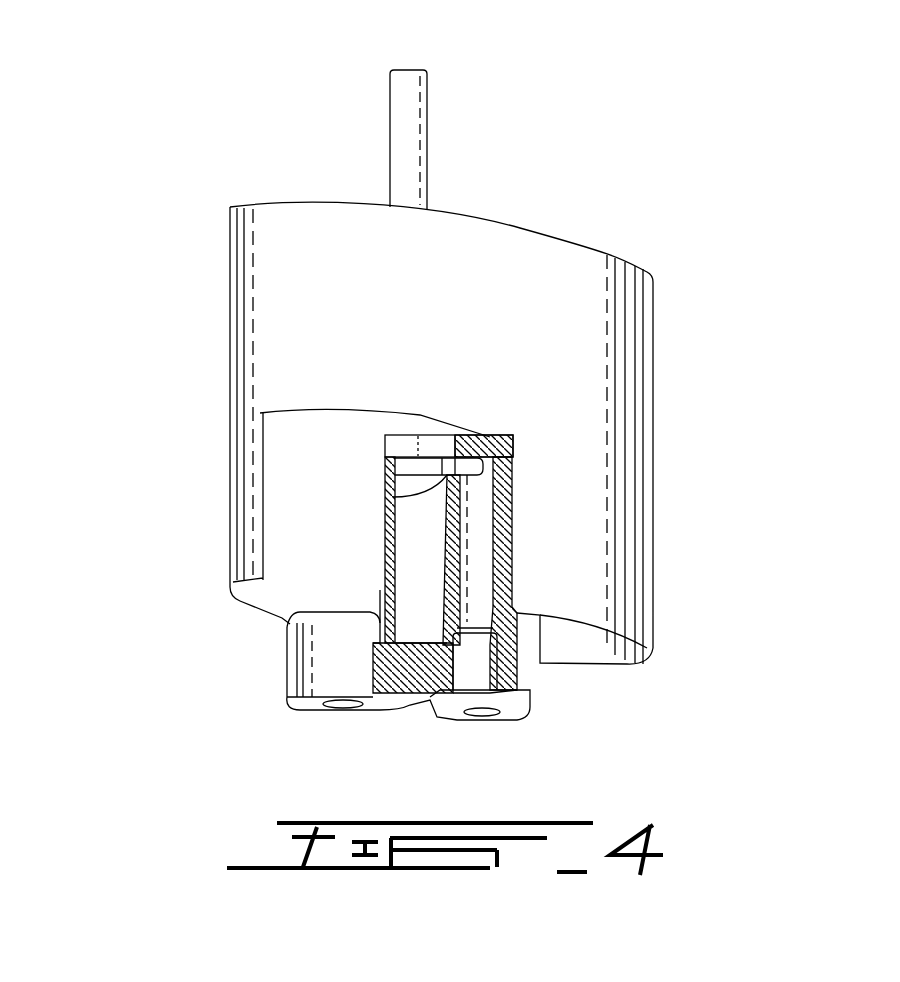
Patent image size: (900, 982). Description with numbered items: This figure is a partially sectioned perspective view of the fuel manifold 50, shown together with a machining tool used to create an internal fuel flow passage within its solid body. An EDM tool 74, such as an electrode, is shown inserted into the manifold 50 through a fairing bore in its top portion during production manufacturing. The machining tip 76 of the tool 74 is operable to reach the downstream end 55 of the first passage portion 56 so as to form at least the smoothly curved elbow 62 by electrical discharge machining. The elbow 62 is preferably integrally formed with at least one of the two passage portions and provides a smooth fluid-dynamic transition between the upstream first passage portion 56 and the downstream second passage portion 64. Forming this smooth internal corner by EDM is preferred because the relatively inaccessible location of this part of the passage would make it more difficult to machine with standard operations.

The fuel manifold 50 is at (652, 248).
The EDM tool 74 is at (430, 131).
The second passage portion 64 is at (473, 443).
The downstream end 55 is at (513, 513).
The elbow 62 is at (513, 452).
The machining tip 76 is at (393, 495).
The first passage portion 56 is at (497, 577).